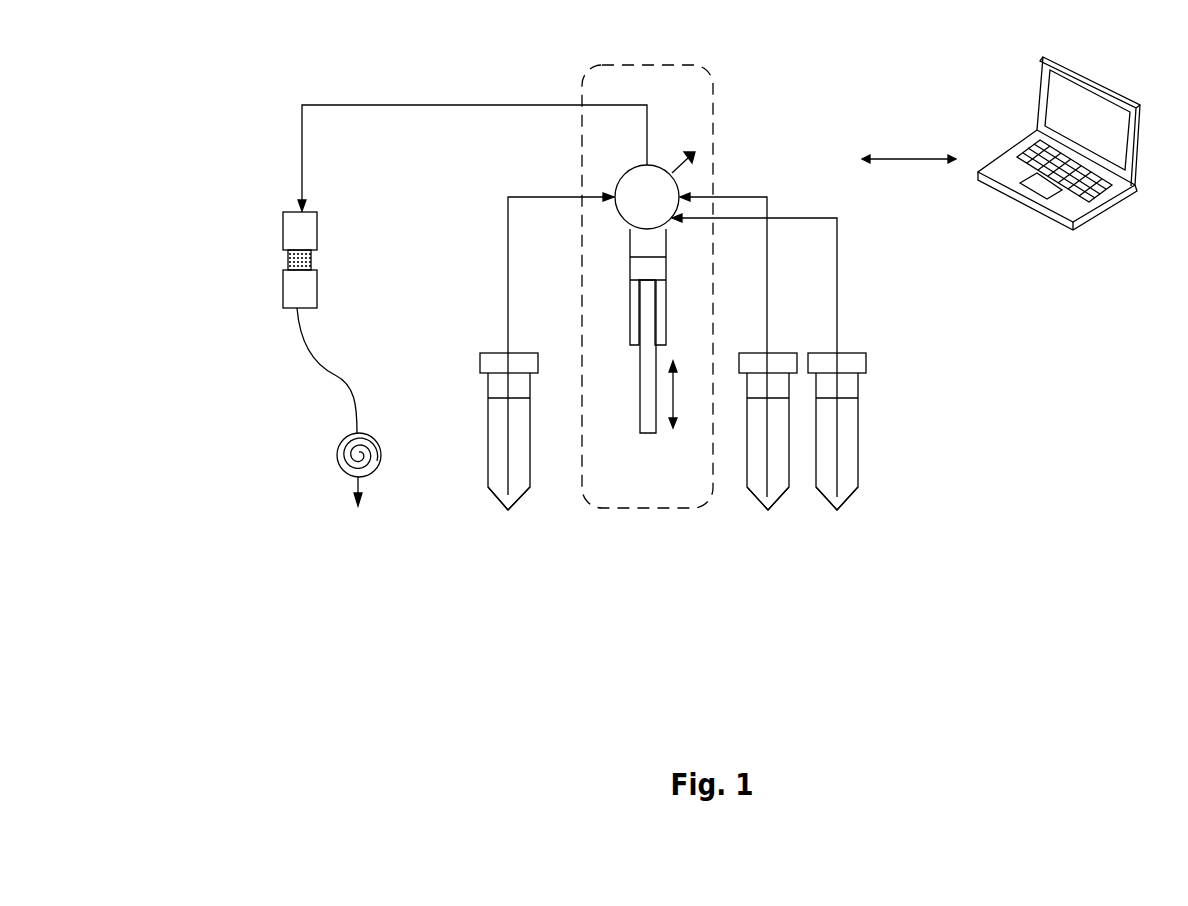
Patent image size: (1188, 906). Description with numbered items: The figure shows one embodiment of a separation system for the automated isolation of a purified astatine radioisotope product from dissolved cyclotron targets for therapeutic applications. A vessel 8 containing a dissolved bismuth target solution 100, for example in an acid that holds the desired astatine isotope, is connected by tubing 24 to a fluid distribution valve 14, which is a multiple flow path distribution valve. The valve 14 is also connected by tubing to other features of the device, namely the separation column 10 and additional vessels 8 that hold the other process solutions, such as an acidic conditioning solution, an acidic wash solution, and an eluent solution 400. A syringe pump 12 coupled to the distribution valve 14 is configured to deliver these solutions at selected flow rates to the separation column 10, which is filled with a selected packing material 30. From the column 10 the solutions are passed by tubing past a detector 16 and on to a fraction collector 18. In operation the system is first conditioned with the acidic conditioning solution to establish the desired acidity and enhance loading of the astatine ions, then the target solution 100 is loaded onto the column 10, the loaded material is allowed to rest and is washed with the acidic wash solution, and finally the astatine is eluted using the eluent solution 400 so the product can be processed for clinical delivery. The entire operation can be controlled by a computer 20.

The vessel 8 is at (515, 508).
The separation column 10 is at (288, 258).
The syringe pump 12 is at (633, 487).
The fluid distribution valve 14 is at (633, 209).
The detector 16 is at (338, 453).
The fraction collector 18 is at (366, 503).
The computer 20 is at (1093, 211).
The tubing 24 is at (427, 104).
The packing material 30 is at (288, 253).
The dissolved bismuth target solution 100 is at (497, 490).
The eluent solution 400 is at (827, 489).